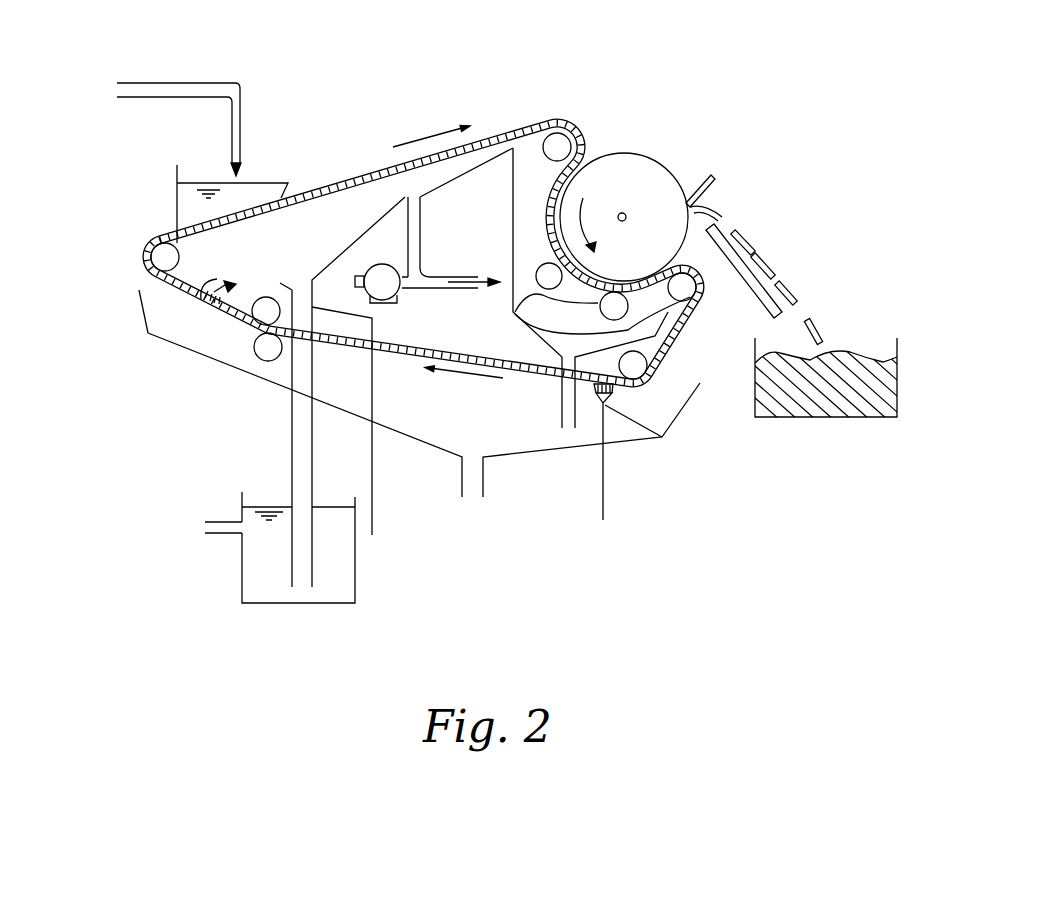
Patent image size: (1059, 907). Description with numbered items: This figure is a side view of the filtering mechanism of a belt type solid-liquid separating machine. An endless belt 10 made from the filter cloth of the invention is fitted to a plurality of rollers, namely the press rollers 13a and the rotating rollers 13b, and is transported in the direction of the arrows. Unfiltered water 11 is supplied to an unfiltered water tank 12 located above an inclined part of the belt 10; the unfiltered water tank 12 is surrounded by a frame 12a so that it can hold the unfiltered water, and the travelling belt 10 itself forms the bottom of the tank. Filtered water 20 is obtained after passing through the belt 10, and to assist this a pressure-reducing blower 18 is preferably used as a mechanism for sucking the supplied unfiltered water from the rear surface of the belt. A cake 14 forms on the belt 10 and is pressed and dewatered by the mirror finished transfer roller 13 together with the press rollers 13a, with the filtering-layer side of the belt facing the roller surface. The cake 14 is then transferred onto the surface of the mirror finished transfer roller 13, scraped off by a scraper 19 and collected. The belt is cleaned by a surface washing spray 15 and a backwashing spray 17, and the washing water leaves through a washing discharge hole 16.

The filter cloth 10 is at (152, 243).
The unfiltered water 11 is at (237, 90).
The unfiltered water tank 12 is at (245, 193).
The frame 12a is at (173, 197).
The mirror finished transfer roller 13 is at (633, 155).
The press roller 13a is at (532, 290).
The rotating roller 13b is at (515, 130).
The cake 14 is at (795, 293).
The surface washing spray 15 is at (608, 402).
The washing discharge hole 16 is at (465, 470).
The backwashing spray 17 is at (192, 300).
The pressure-reducing blower 18 is at (395, 291).
The scraper 19 is at (712, 172).
The filtered water 20 is at (340, 570).